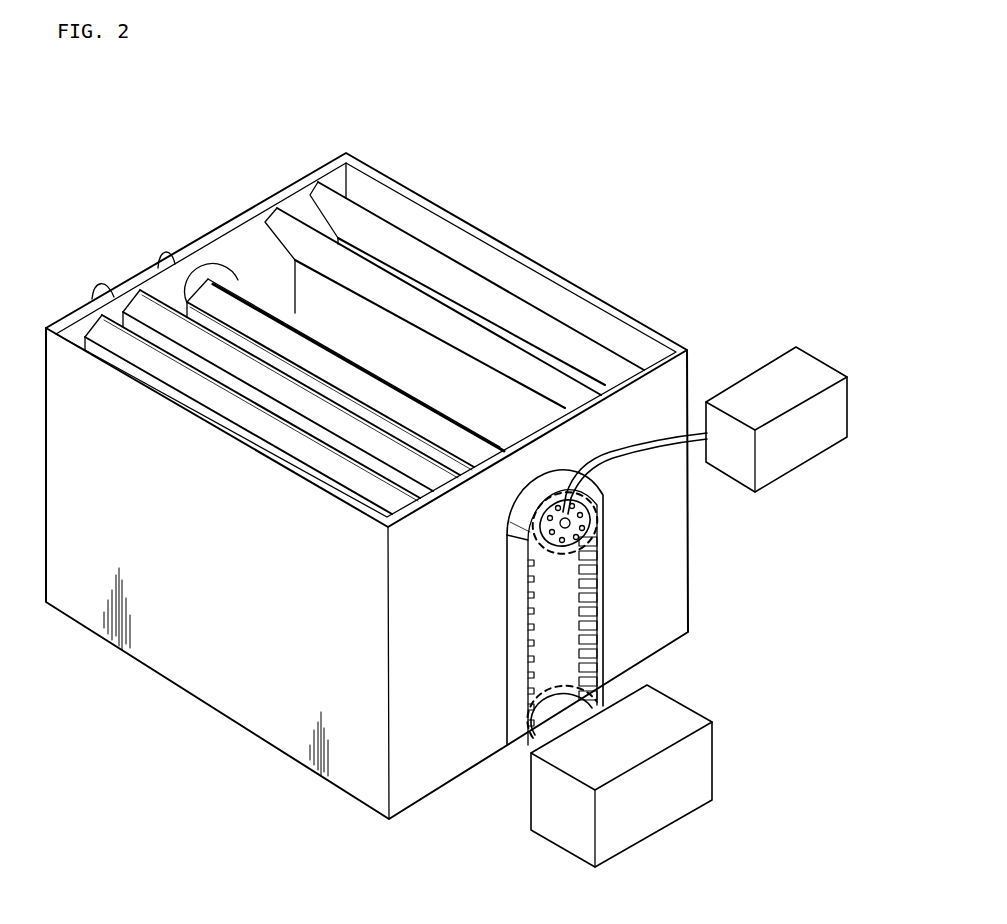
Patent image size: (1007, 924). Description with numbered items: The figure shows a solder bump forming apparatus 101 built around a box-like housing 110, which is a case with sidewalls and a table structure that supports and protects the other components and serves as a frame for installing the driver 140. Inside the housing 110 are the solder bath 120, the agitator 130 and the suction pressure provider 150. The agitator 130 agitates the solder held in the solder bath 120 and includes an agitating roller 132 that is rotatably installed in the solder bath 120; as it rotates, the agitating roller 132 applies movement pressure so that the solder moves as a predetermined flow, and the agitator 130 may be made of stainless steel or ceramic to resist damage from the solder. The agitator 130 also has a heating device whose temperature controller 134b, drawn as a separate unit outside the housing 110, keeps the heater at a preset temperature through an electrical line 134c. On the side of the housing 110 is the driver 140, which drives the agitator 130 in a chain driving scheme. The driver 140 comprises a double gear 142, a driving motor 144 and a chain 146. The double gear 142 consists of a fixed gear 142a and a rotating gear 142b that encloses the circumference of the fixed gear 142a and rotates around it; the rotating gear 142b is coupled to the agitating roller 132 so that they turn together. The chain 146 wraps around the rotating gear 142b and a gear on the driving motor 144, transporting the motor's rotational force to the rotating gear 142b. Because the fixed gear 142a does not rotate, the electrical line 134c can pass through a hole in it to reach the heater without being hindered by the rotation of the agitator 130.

The solder bump forming apparatus 101 is at (78, 97).
The housing 110 is at (225, 714).
The solder bath 120 is at (133, 310).
The agitator 130 is at (194, 271).
The agitating roller 132 is at (236, 276).
The temperature controller 134b is at (771, 467).
The electrical line 134c is at (645, 452).
The driver 140 is at (828, 566).
The double gear 142 is at (770, 540).
The fixed gear 142a is at (602, 535).
The rotating gear 142b is at (602, 507).
The driving motor 144 is at (707, 745).
The chain 146 is at (602, 595).
The suction pressure provider 150 is at (412, 228).